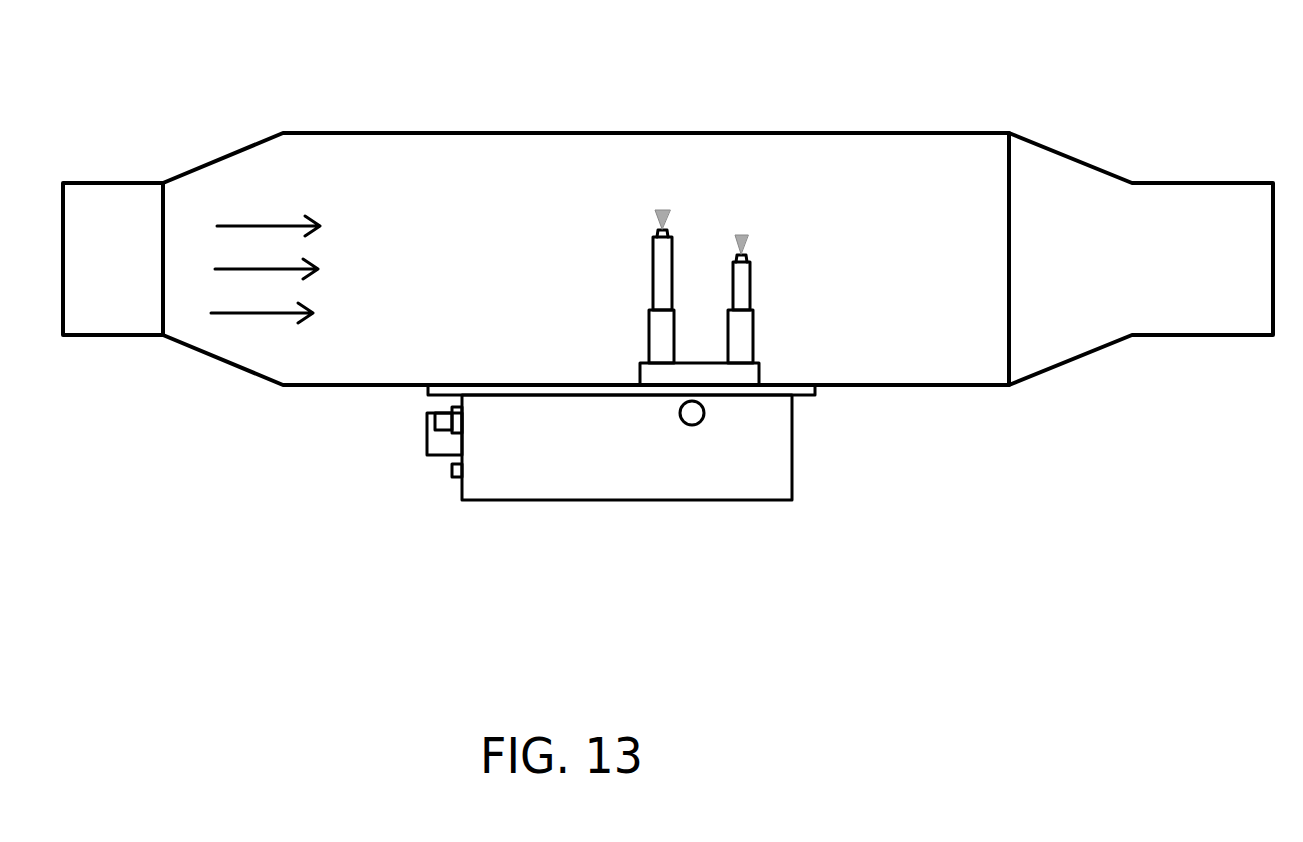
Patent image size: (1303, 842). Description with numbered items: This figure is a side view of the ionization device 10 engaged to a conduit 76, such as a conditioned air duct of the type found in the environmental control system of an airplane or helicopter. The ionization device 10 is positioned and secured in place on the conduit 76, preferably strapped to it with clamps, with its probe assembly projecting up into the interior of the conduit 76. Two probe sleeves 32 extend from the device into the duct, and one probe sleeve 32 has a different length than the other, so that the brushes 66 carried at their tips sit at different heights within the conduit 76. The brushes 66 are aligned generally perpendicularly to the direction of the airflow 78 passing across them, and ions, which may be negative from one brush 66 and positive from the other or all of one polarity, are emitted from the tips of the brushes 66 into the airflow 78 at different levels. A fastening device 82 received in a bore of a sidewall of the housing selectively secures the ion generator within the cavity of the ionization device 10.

The ionization device 10 is at (472, 527).
The probe sleeve 32 is at (662, 262).
The brushes 66 is at (747, 238).
The conduit 76 is at (518, 180).
The airflow 78 is at (265, 252).
The fastening device 82 is at (690, 413).